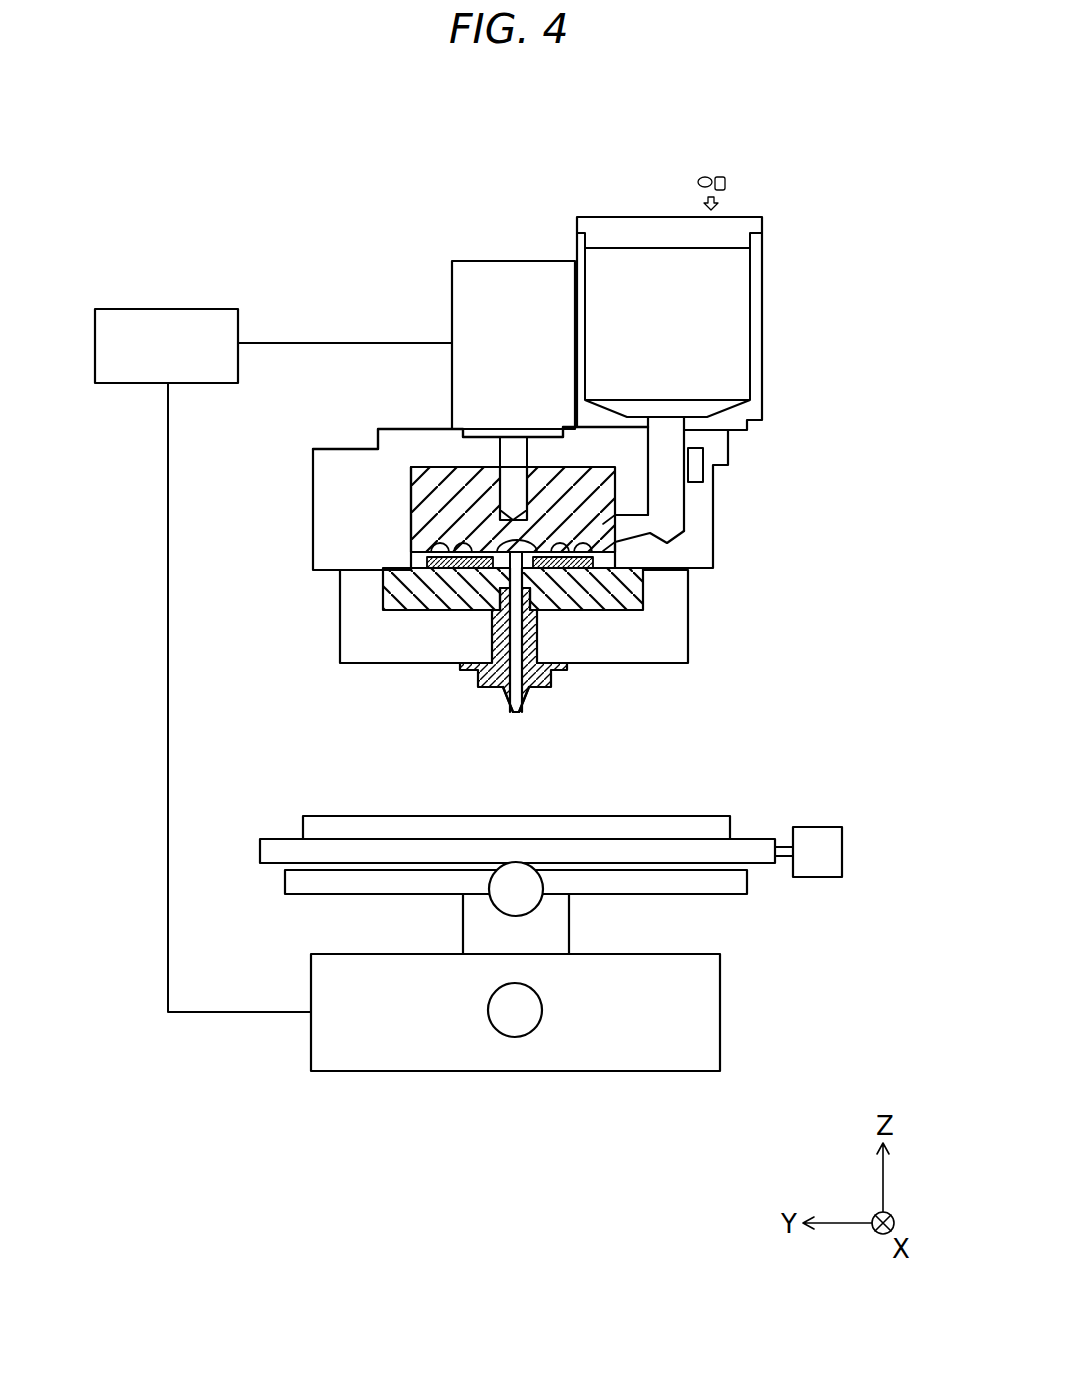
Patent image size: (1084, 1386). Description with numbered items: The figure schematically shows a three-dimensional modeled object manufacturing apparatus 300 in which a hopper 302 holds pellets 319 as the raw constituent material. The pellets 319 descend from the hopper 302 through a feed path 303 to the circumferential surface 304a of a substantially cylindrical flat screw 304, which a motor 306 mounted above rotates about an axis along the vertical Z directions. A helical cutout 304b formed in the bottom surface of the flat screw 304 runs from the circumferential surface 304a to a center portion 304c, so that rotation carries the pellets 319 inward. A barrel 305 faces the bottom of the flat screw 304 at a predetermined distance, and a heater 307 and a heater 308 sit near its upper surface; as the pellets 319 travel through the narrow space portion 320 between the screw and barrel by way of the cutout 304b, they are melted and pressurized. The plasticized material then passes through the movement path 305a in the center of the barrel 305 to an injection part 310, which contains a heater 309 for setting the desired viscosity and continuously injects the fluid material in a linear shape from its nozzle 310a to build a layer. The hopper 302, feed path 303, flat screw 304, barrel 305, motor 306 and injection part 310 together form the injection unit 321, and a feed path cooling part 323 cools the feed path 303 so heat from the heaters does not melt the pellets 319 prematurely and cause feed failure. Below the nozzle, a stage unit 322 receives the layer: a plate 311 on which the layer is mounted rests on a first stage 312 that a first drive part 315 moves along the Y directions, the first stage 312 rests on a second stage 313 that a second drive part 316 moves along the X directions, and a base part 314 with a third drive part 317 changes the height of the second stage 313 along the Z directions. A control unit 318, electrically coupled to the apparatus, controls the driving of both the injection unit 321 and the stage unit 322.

The three-dimensional modeled object manufacturing apparatus 300 is at (828, 157).
The hopper 302 is at (670, 265).
The feed path 303 is at (668, 483).
The flat screw 304 is at (437, 480).
The circumferential surface 304a is at (667, 543).
The helical cutout 304b is at (450, 547).
The center portion 304c is at (490, 547).
The barrel 305 is at (392, 584).
The movement path 305a is at (515, 588).
The motor 306 is at (507, 290).
The heater 307 is at (573, 565).
The heater 308 is at (457, 607).
The heater 309 is at (535, 632).
The injection part 310 is at (480, 670).
The nozzle 310a is at (520, 714).
The plate 311 is at (345, 813).
The first stage 312 is at (397, 847).
The second stage 313 is at (327, 885).
The base part 314 is at (643, 1033).
The first drive part 315 is at (818, 856).
The second drive part 316 is at (522, 890).
The third drive part 317 is at (515, 1018).
The control unit 318 is at (168, 328).
The pellets 319 is at (722, 178).
The space portion 320 is at (520, 547).
The injection unit 321 is at (788, 388).
The stage unit 322 is at (758, 1020).
The feed path cooling part 323 is at (697, 465).